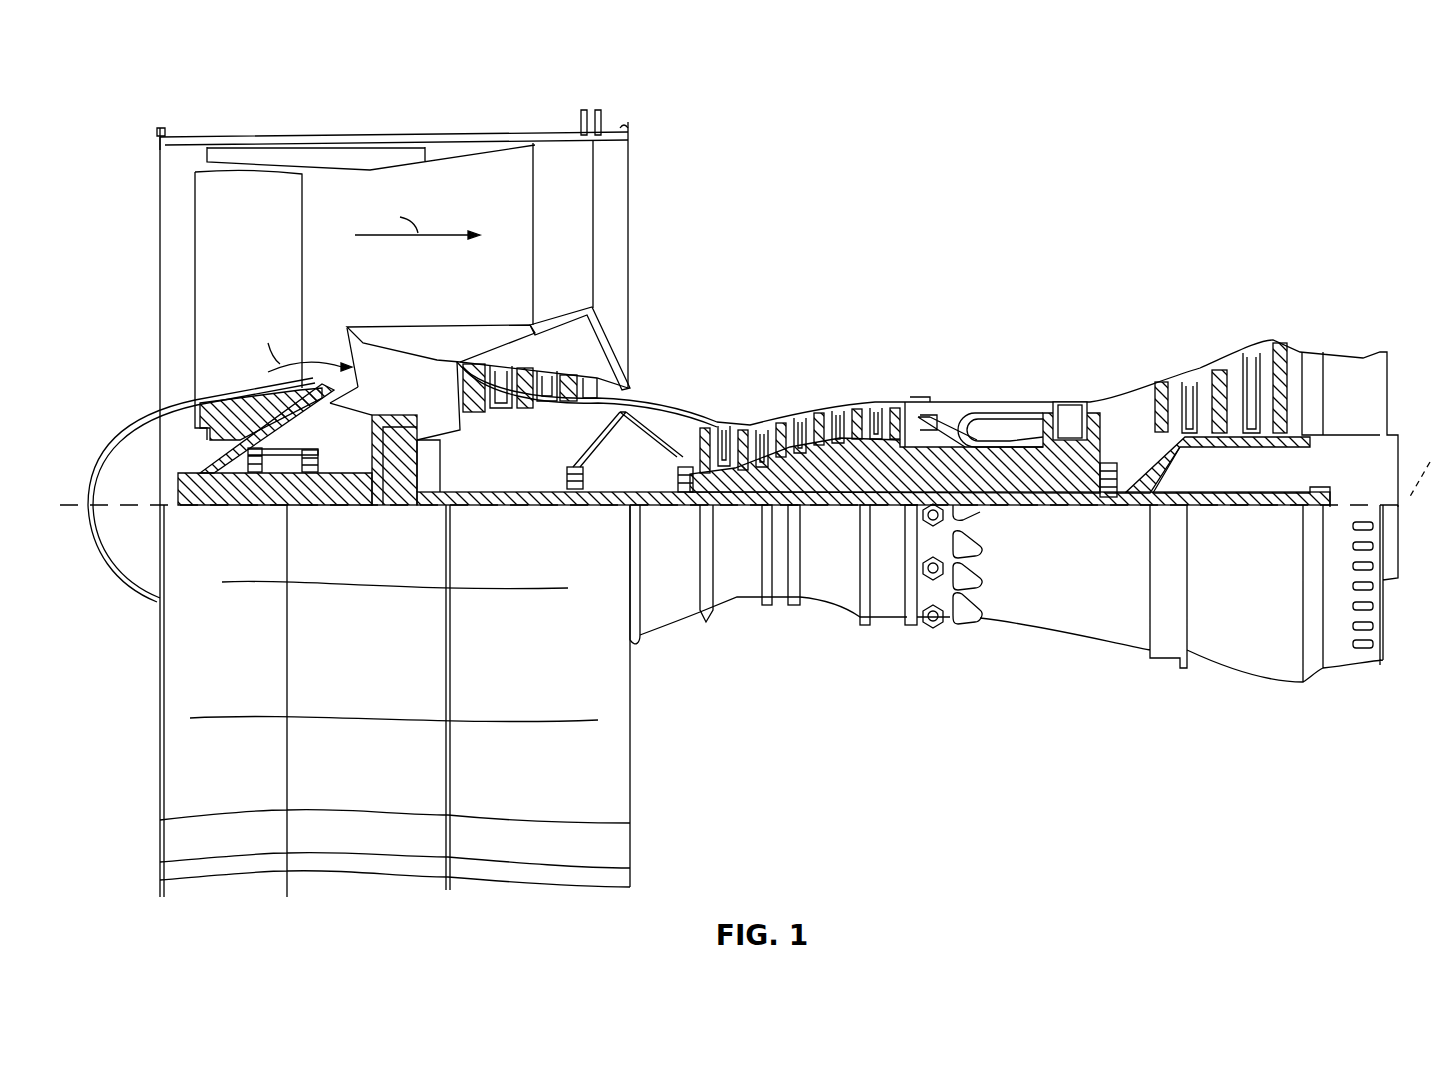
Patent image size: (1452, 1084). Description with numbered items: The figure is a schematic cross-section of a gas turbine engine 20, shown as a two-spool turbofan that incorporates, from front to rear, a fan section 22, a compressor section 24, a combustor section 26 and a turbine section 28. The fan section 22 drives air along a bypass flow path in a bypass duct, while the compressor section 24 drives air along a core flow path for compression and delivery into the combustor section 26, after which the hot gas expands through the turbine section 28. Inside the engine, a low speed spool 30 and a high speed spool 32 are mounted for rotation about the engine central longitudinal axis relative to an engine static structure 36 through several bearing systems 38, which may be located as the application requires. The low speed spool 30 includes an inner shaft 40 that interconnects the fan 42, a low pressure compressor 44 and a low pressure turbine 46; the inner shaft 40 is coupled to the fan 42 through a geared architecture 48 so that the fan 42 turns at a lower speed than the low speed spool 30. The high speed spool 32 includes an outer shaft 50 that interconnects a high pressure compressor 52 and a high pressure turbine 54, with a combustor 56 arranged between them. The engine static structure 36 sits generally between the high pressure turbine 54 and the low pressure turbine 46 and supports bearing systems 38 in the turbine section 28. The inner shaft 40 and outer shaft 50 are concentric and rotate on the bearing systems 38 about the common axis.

The gas turbine engine 20 is at (747, 479).
The fan section 22 is at (262, 128).
The compressor section 24 is at (895, 393).
The combustor section 26 is at (1002, 369).
The turbine section 28 is at (1242, 392).
The low speed spool 30 is at (851, 510).
The high speed spool 32 is at (920, 418).
The engine static structure 36 is at (891, 624).
The bearing systems 38 is at (262, 466).
The inner shaft 40 is at (643, 500).
The fan 42 is at (278, 266).
The low pressure compressor 44 is at (548, 378).
The low pressure turbine 46 is at (1237, 362).
The geared architecture 48 is at (400, 480).
The outer shaft 50 is at (1018, 494).
The high pressure compressor 52 is at (810, 470).
The high pressure turbine 54 is at (1073, 403).
The combustor 56 is at (993, 425).